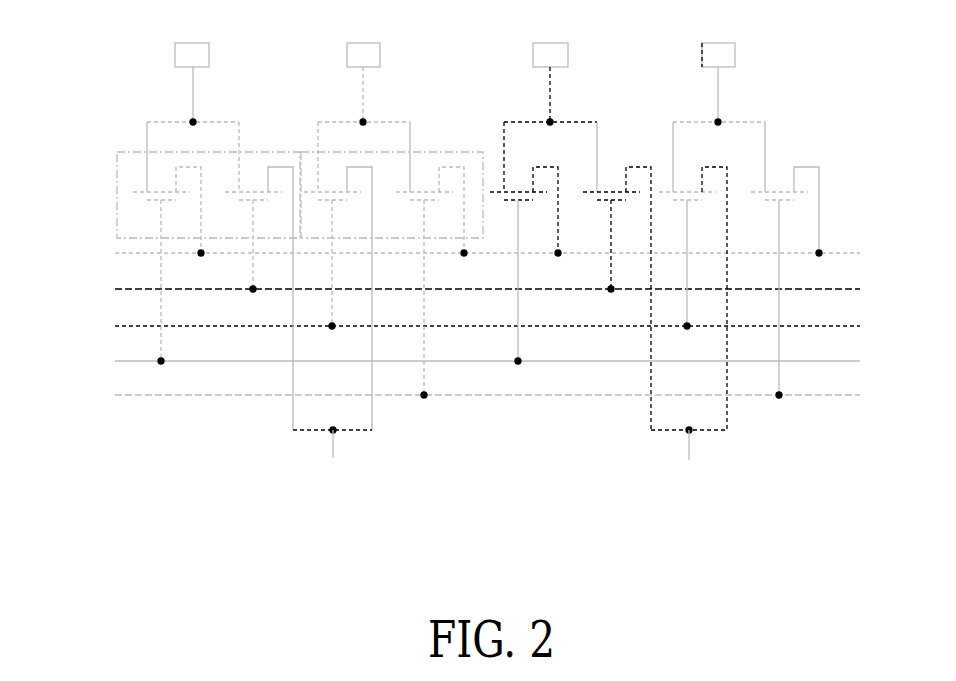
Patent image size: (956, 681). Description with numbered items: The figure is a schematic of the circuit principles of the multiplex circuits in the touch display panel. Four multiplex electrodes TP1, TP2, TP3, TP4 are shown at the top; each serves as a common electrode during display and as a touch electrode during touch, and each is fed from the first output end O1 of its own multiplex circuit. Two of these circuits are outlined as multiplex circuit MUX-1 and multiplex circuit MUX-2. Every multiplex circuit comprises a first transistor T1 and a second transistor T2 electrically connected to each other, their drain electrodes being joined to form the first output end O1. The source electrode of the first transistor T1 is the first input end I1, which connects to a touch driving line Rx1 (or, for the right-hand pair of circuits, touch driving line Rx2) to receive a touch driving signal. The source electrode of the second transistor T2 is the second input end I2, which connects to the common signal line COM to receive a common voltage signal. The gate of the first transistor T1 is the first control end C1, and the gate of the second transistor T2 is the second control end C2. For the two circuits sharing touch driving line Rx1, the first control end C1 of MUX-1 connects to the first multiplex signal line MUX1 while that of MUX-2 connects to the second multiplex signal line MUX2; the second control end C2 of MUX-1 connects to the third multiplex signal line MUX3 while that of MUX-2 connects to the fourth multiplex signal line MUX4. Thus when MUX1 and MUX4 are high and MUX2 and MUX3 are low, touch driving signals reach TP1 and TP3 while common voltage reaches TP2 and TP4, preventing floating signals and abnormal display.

The multiplex electrode TP1 is at (193, 100).
The multiplex electrode TP2 is at (364, 100).
The multiplex electrode TP3 is at (550, 100).
The multiplex electrode TP4 is at (719, 100).
The first output end O1 is at (455, 107).
The multiplex circuit MUX-1 is at (116, 167).
The multiplex circuit MUX-2 is at (457, 152).
The first transistor T1 is at (476, 298).
The second transistor T2 is at (476, 281).
The first input end I1 is at (509, 416).
The second input end I2 is at (507, 268).
The first control end C1 is at (467, 323).
The second control end C2 is at (467, 394).
The touch driving line Rx1 is at (332, 459).
The touch driving line Rx2 is at (689, 459).
The common signal line COM is at (512, 254).
The first multiplex signal line MUX1 is at (519, 289).
The second multiplex signal line MUX2 is at (519, 326).
The third multiplex signal line MUX3 is at (519, 360).
The fourth multiplex signal line MUX4 is at (519, 395).